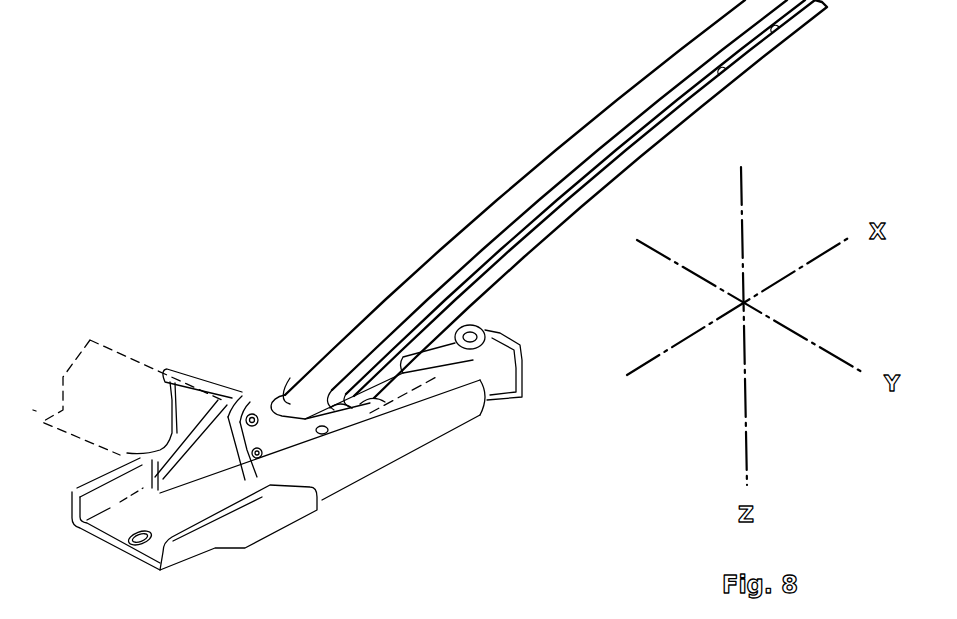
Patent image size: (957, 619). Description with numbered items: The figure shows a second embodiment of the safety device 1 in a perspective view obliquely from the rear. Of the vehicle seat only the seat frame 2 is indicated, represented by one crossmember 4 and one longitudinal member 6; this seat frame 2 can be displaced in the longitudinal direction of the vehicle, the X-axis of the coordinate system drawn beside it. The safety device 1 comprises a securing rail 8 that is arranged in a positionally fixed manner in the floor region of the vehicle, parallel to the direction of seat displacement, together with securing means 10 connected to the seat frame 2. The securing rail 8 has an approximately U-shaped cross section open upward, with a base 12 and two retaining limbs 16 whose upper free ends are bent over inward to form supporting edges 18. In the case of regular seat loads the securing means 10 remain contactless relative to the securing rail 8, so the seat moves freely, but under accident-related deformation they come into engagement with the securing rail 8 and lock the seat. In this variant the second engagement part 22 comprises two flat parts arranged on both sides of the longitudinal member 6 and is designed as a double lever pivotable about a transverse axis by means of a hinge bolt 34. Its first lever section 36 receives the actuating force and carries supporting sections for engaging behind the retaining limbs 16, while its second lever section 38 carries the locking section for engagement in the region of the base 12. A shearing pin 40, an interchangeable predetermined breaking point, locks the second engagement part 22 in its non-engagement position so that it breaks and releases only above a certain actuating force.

The safety device 1 is at (340, 507).
The seat frame 2 is at (556, 132).
The crossmember 4 is at (97, 373).
The longitudinal member 6 is at (505, 212).
The securing rail 8 is at (437, 435).
The securing means 10 is at (267, 384).
The base 12 is at (500, 333).
The retaining limbs 16 is at (395, 445).
The supporting edges 18 is at (448, 382).
The second engagement part 22 is at (340, 404).
The hinge bolt 34 is at (328, 432).
The first lever section 36 is at (242, 384).
The second lever section 38 is at (370, 398).
The shearing pin 40 is at (260, 458).